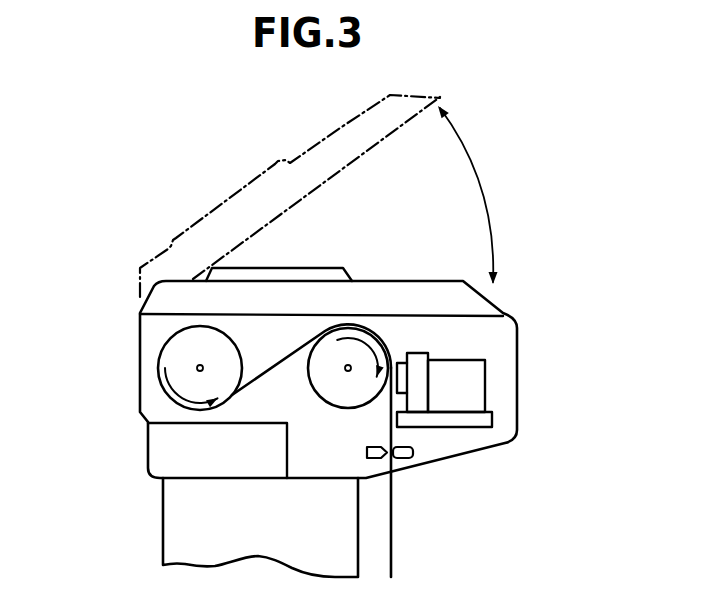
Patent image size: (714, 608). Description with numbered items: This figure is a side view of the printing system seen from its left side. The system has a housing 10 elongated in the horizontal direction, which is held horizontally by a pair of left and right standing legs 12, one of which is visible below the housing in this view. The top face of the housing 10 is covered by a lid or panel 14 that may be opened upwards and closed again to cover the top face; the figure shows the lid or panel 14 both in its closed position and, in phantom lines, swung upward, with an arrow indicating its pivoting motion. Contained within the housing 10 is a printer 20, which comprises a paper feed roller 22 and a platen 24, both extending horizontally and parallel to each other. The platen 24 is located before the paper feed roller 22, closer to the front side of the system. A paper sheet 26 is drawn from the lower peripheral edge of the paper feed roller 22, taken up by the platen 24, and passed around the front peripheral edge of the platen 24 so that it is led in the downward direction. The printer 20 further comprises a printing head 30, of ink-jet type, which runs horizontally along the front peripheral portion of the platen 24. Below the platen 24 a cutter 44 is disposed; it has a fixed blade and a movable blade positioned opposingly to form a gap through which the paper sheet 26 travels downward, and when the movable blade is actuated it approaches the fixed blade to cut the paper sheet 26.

The housing 10 is at (521, 373).
The standing leg 12 is at (163, 520).
The lid or panel 14 is at (430, 99).
The printer 20 is at (393, 342).
The paper feed roller 22 is at (160, 346).
The platen 24 is at (330, 408).
The paper sheet 26 is at (393, 517).
The printing head 30 is at (463, 360).
The cutter 44 is at (415, 453).